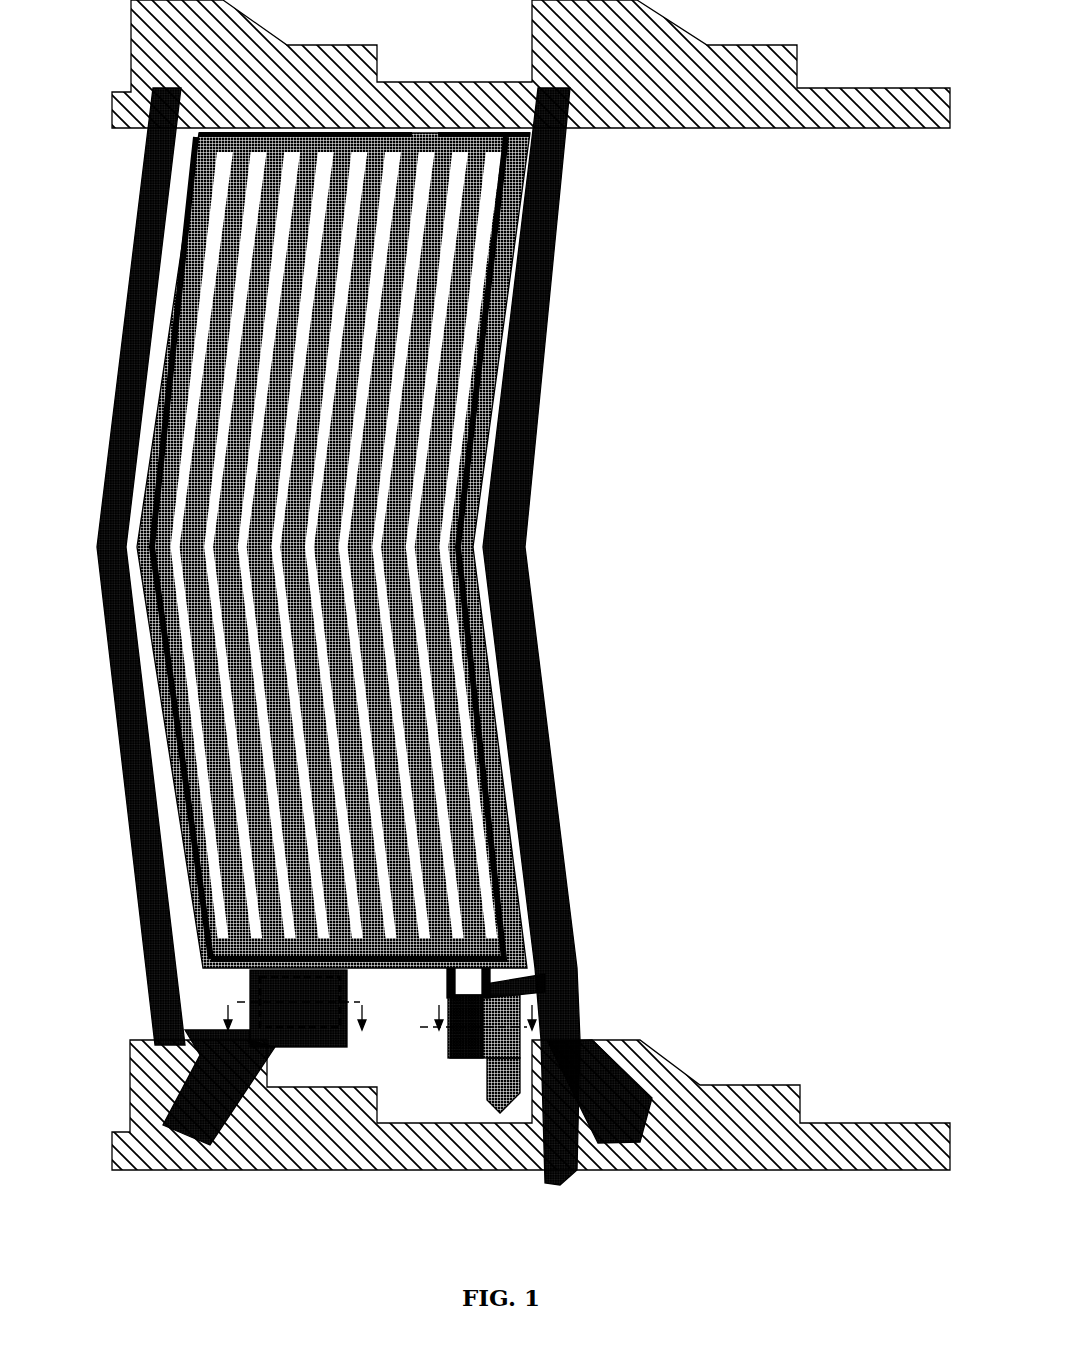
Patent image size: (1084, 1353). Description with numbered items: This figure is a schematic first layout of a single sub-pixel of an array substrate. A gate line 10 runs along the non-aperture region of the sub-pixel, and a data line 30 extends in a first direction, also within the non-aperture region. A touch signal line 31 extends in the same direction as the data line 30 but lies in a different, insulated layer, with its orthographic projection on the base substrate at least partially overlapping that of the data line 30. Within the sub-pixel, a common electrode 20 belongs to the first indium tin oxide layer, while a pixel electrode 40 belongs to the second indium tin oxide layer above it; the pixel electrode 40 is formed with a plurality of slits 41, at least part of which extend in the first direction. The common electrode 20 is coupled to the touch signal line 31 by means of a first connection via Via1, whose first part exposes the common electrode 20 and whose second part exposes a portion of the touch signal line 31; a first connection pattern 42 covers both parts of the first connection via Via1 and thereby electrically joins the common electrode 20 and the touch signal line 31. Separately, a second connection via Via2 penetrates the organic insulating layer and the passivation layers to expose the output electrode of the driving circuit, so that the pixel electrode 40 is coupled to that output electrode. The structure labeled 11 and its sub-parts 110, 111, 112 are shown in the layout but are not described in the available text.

The gate line 10 is at (800, 1090).
The electrode assembly 11 is at (424, 538).
The first electrode lead 110 is at (195, 212).
The second electrode lead 111 is at (508, 257).
The top electrode lead 112 is at (527, 143).
The common electrode 20 is at (498, 783).
The data line 30 is at (128, 273).
The touch signal line 31 is at (587, 1040).
The pixel electrode 40 is at (517, 903).
The slits 41 is at (458, 880).
The first connection pattern 42 is at (527, 978).
The first connection via Via1 is at (470, 1058).
The second connection via Via2 is at (316, 1010).